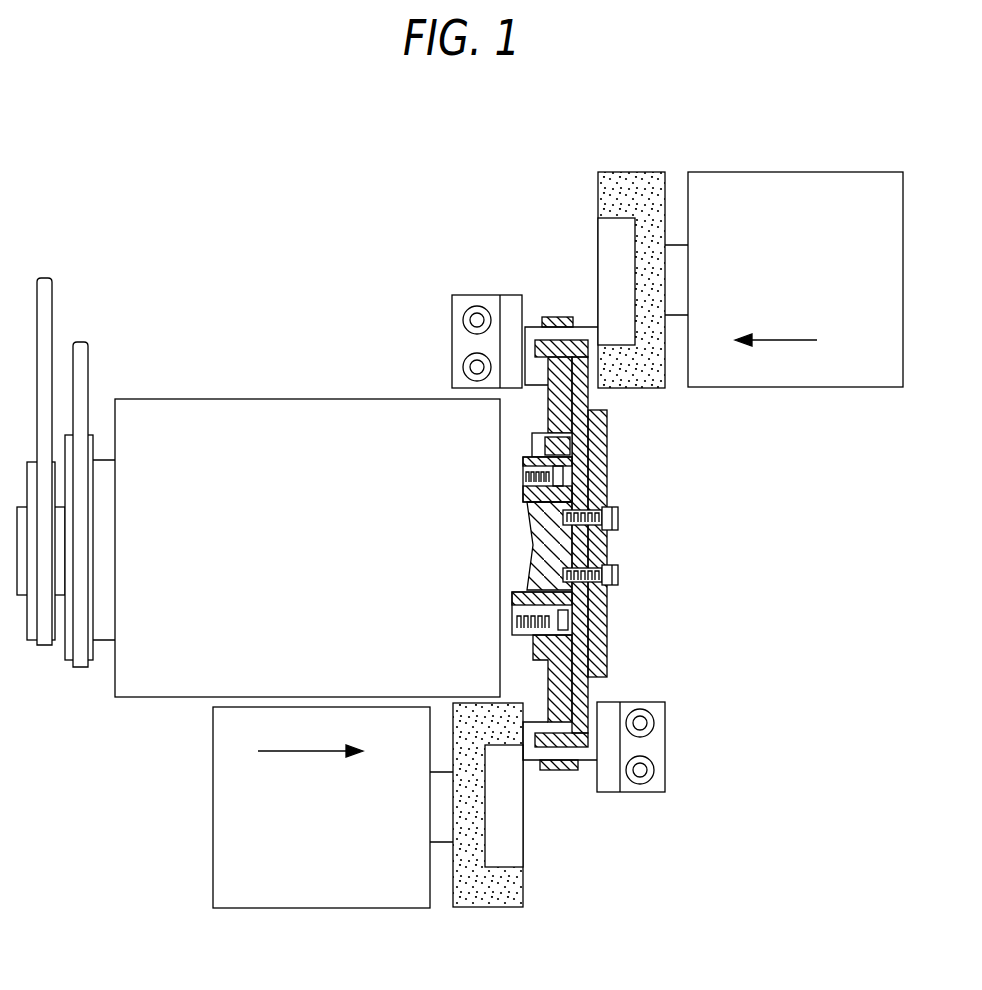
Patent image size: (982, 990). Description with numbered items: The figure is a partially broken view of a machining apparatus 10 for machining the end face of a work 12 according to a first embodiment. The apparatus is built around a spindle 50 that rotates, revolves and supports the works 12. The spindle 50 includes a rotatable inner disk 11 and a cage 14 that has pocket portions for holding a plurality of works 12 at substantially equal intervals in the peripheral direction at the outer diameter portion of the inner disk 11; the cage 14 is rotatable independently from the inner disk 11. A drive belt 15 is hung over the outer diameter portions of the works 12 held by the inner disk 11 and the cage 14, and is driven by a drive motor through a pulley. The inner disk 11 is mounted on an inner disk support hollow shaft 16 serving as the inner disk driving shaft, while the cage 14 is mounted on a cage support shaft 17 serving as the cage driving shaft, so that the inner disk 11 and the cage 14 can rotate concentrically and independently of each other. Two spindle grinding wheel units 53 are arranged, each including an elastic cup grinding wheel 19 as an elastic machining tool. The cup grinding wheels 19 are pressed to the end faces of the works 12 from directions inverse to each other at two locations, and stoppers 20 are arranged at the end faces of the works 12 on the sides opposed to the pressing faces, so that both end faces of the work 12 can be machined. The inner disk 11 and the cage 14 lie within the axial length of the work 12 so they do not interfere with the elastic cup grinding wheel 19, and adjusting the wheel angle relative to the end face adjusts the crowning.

The machining apparatus 10 is at (277, 338).
The inner disk 11 is at (560, 433).
The work 12 is at (587, 756).
The cage 14 is at (600, 660).
The drive belt 15 is at (562, 770).
The inner disk support hollow shaft 16 is at (600, 645).
The cage support shaft 17 is at (560, 545).
The elastic cup grinding wheel 19 is at (607, 190).
The stopper 20 is at (508, 313).
The spindle 50 is at (342, 398).
The spindle grinding wheel unit 53 is at (853, 172).